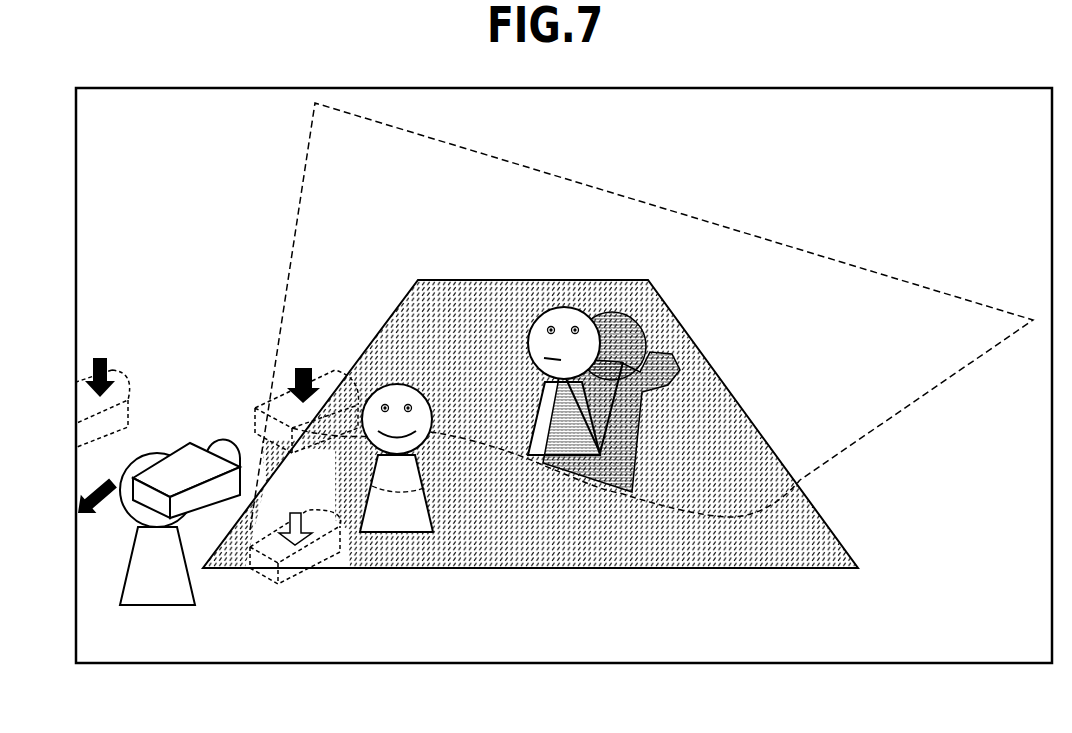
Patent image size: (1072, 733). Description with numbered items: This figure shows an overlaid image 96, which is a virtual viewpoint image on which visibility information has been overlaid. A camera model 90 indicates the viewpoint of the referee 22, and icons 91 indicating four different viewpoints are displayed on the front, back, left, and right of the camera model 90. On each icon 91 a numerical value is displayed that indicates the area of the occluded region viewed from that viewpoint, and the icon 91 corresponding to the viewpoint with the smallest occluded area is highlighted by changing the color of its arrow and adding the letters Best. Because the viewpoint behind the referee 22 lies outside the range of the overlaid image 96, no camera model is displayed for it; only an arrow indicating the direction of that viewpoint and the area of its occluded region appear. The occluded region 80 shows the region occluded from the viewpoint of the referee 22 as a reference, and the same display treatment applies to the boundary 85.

The referee 22 is at (157, 453).
The occluded region 80 is at (663, 350).
The boundary 85 is at (295, 236).
The camera model 90 is at (200, 452).
The icons 91 is at (258, 548).
The overlaid image 96 is at (610, 663).